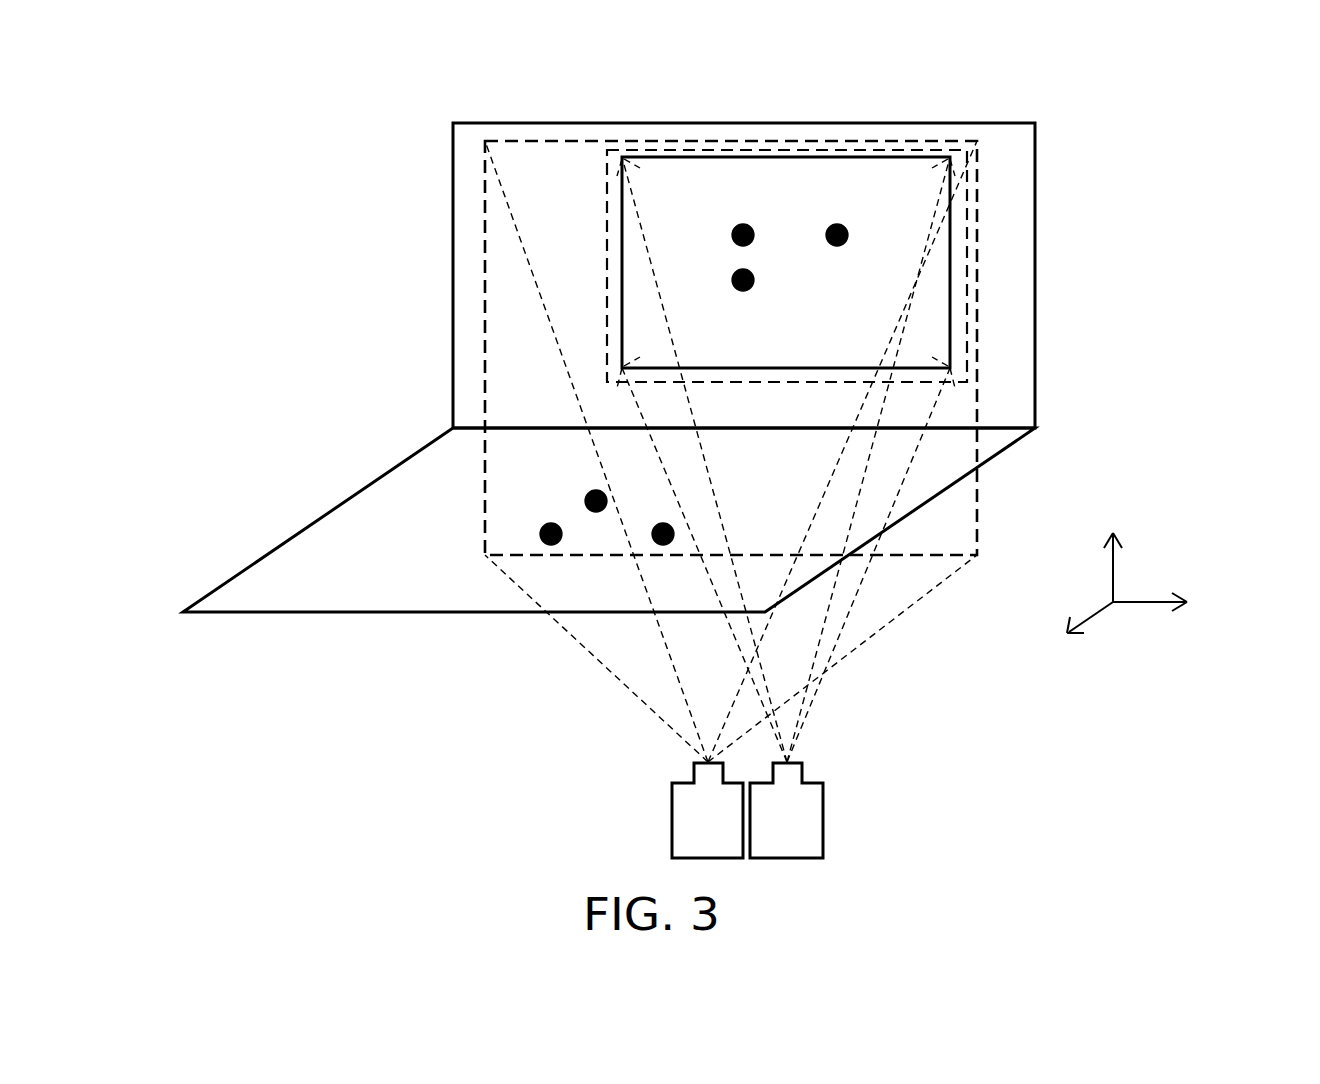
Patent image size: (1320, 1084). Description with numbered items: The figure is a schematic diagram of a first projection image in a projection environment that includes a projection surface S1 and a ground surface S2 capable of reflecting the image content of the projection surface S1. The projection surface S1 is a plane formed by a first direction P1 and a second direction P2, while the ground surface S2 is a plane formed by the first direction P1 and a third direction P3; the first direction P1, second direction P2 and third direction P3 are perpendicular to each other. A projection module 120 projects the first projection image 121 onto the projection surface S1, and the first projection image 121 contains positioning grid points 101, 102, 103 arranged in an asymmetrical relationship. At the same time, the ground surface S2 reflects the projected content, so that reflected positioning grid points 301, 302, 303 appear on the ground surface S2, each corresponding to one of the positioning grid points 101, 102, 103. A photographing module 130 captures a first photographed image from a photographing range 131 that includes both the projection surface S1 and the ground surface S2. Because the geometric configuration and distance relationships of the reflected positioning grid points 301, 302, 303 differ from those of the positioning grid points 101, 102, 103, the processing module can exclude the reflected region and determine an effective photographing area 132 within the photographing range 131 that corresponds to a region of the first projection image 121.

The positioning grid point 101 is at (844, 226).
The positioning grid point 102 is at (750, 226).
The positioning grid point 103 is at (756, 278).
The projection module 120 is at (823, 816).
The first projection image 121 is at (678, 157).
The photographing module 130 is at (672, 816).
The photographing range 131 is at (572, 141).
The effective photographing area 132 is at (860, 150).
The positioning grid point 301 is at (665, 546).
The positioning grid point 302 is at (542, 526).
The positioning grid point 303 is at (587, 493).
The projection surface S1 is at (470, 186).
The ground surface S2 is at (363, 537).
The first direction P1 is at (1168, 603).
The second direction P2 is at (1113, 549).
The third direction P3 is at (1072, 631).